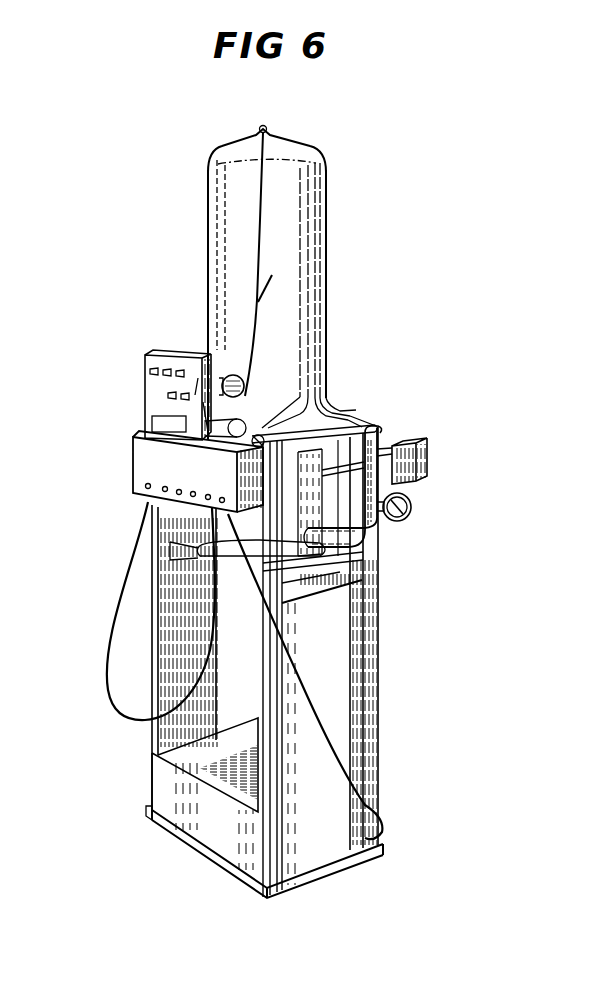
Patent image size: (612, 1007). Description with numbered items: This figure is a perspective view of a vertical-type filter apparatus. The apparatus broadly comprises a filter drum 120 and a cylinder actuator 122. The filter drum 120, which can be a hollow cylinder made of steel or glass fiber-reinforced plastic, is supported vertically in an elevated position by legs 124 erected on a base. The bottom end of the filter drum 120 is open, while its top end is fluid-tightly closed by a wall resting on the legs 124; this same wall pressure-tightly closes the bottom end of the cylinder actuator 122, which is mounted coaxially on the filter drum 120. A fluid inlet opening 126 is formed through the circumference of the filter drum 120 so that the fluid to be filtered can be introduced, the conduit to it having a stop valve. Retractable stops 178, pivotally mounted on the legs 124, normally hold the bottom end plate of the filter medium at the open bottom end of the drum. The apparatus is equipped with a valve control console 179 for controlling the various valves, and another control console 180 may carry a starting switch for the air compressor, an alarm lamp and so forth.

The cylinder actuator 122 is at (316, 262).
The filter drum 120 is at (378, 428).
The control console 180 is at (145, 400).
The valve control console 179 is at (133, 471).
The fluid inlet opening 126 is at (372, 484).
The retractable stops 178 is at (360, 565).
The legs 124 is at (372, 633).